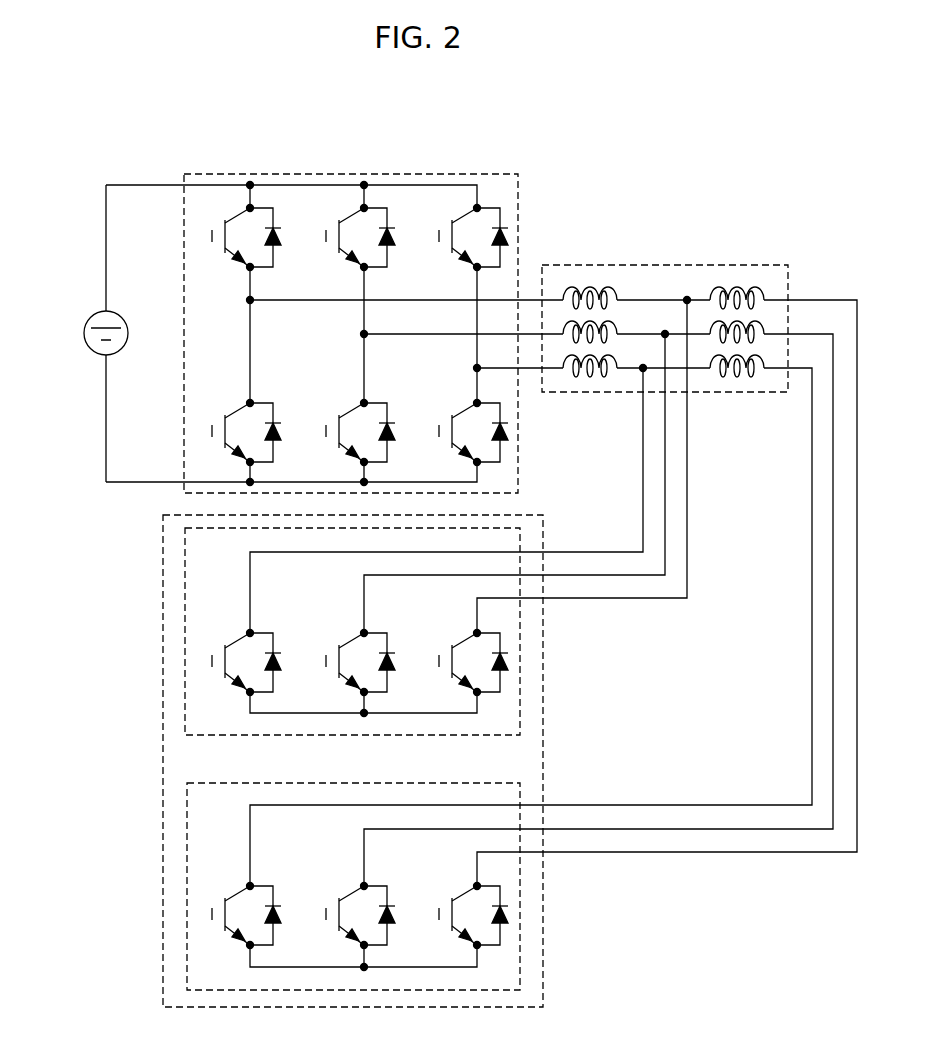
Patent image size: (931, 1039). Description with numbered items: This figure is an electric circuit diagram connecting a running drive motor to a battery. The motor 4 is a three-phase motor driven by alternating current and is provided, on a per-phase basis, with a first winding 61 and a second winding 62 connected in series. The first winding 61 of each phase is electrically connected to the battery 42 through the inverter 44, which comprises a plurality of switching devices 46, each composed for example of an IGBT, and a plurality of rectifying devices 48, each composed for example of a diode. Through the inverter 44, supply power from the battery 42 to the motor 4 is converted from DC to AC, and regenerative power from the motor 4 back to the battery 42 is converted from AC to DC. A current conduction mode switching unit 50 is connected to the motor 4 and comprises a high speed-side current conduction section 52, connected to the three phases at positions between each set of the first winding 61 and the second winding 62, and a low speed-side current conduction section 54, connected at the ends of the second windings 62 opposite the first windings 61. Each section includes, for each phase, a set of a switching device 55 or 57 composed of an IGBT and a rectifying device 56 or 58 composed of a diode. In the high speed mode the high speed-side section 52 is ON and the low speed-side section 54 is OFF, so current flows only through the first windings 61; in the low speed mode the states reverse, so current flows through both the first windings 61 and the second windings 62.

The motor 4 is at (663, 265).
The battery 42 is at (84, 331).
The inverter 44 is at (330, 174).
The switching device 46 is at (238, 214).
The rectifying device 48 is at (273, 228).
The current conduction mode switching unit 50 is at (163, 757).
The high speed-side current conduction section 52 is at (185, 590).
The low speed-side current conduction section 54 is at (187, 832).
The switching device 55 is at (352, 641).
The rectifying device 56 is at (389, 665).
The switching device 57 is at (352, 895).
The rectifying device 58 is at (389, 918).
The first winding 61 is at (618, 334).
The second winding 62 is at (765, 334).